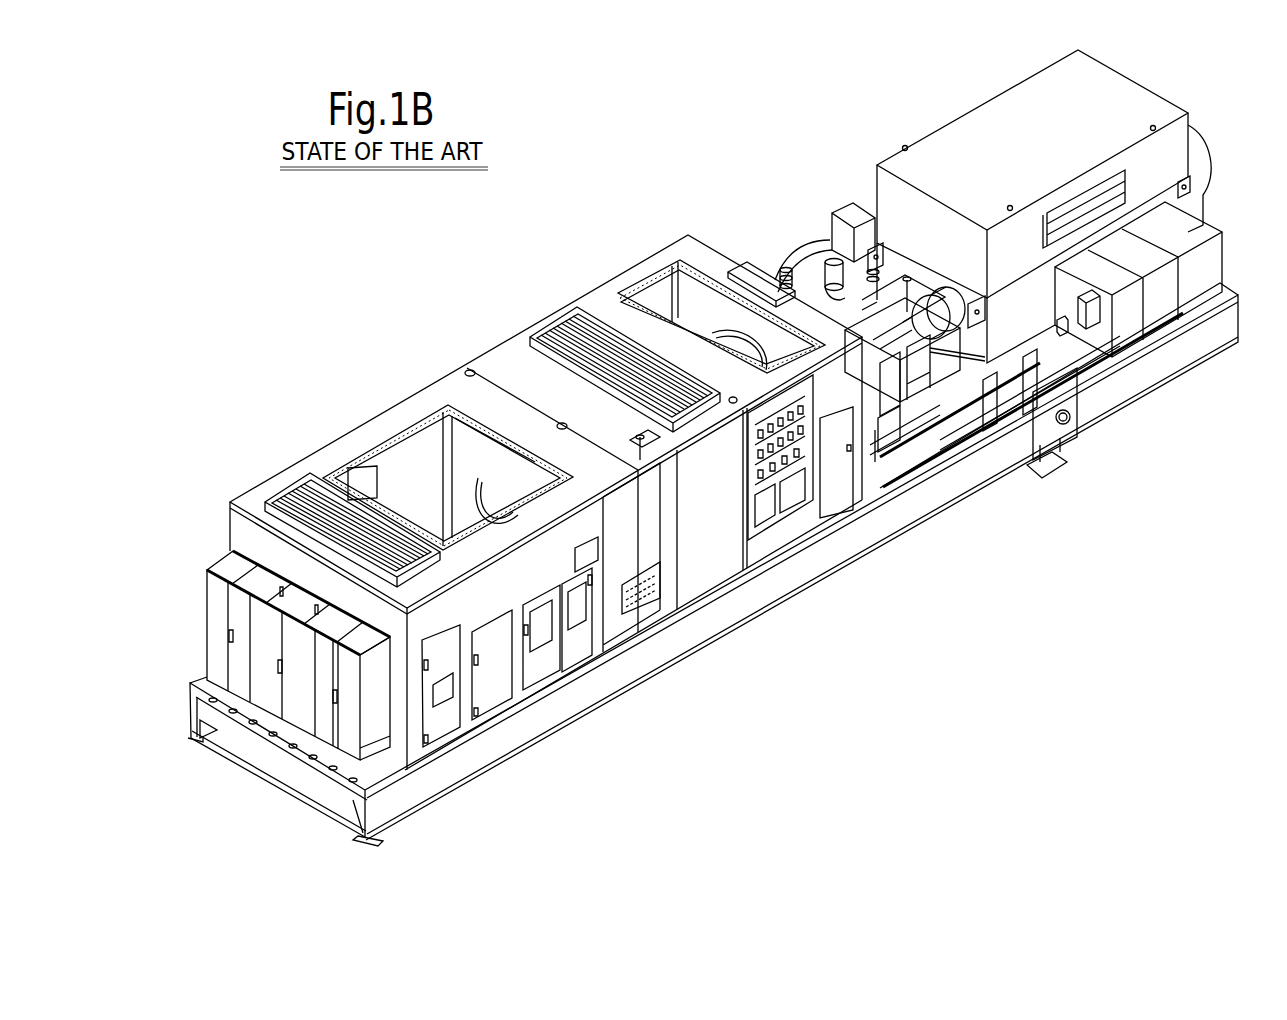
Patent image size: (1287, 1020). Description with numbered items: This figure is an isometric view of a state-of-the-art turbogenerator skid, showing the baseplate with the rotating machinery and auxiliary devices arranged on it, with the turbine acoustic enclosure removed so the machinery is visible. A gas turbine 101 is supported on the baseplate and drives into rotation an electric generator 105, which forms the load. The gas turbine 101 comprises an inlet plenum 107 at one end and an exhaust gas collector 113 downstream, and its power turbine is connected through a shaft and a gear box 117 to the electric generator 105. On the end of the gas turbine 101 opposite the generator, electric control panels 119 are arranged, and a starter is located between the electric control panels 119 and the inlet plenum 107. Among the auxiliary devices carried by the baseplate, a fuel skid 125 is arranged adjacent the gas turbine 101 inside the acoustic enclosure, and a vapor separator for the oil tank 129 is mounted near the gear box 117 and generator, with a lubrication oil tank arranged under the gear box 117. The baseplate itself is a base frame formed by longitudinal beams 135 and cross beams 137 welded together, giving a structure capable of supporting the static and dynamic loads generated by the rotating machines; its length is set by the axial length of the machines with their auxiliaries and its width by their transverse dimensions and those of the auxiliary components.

The gas turbine 101 is at (465, 345).
The electric generator 105 is at (998, 82).
The inlet plenum 107 is at (420, 482).
The exhaust gas collector 113 is at (668, 300).
The gear box 117 is at (832, 305).
The electric control panels 119 is at (233, 570).
The fuel skid 125 is at (664, 587).
The vapor separator for the oil tank 129 is at (855, 205).
The longitudinal beams 135 is at (213, 743).
The cross beams 137 is at (303, 773).